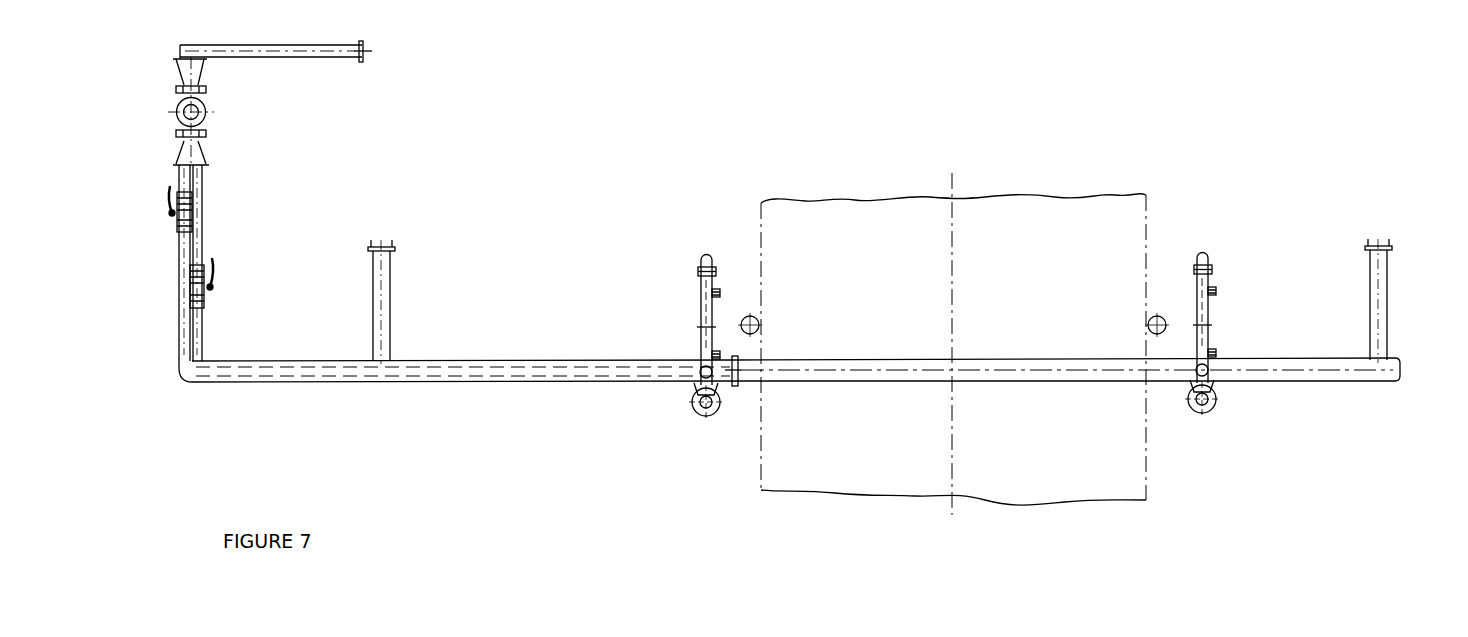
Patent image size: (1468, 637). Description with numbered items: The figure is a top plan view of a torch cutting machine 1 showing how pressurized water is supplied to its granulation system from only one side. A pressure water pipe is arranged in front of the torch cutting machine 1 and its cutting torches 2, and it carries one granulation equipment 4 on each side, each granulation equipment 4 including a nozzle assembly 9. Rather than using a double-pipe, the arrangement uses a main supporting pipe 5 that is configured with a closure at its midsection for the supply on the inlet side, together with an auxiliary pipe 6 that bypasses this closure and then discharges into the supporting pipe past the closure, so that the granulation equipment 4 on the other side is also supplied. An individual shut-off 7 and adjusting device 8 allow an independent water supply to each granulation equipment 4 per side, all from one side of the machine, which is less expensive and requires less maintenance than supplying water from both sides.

The torch cutting machine 1 is at (385, 283).
The cutting torches 2 is at (745, 316).
The granulation equipment 4 is at (692, 405).
The main supporting pipe 5 is at (836, 357).
The auxiliary pipe 6 is at (295, 377).
The shut-off 7 is at (208, 118).
The adjusting device 8 is at (210, 287).
The nozzle assembly 9 is at (702, 302).